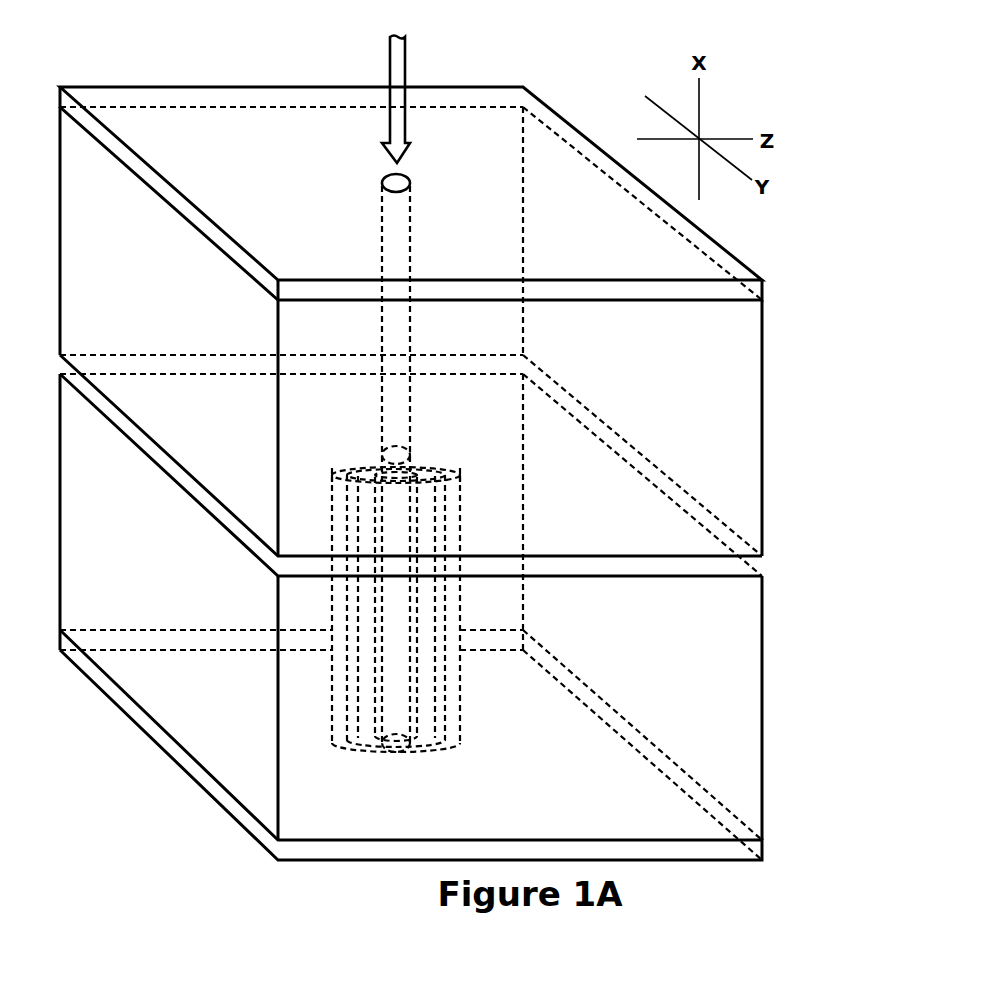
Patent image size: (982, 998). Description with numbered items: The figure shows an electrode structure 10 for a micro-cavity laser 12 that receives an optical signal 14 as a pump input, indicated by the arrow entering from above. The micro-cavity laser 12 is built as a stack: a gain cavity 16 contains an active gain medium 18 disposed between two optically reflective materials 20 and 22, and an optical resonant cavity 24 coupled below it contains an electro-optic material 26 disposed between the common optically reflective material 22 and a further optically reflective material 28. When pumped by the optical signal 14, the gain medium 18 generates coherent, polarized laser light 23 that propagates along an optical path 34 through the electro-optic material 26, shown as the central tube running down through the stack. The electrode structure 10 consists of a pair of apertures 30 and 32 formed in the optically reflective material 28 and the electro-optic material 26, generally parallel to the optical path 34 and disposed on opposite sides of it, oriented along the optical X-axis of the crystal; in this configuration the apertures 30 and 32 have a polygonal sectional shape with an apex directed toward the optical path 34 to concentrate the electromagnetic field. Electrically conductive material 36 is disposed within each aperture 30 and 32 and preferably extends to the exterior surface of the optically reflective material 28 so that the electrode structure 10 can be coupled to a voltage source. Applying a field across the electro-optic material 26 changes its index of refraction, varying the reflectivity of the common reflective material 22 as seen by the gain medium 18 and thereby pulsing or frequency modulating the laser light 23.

The electrode structure 10 is at (455, 444).
The micro-cavity laser 12 is at (210, 65).
The optical signal 14 is at (405, 60).
The gain cavity 16 is at (777, 371).
The active gain medium 18 is at (762, 428).
The optically reflective material 20 is at (762, 290).
The optically reflective material 22 is at (762, 565).
The laser light 23 is at (411, 325).
The optical resonant cavity 24 is at (777, 660).
The electro-optic material 26 is at (762, 736).
The optically reflective material 28 is at (762, 848).
The aperture 30 is at (455, 520).
The aperture 32 is at (345, 520).
The optical path 34 is at (397, 598).
The electrically conductive material 36 is at (341, 467).